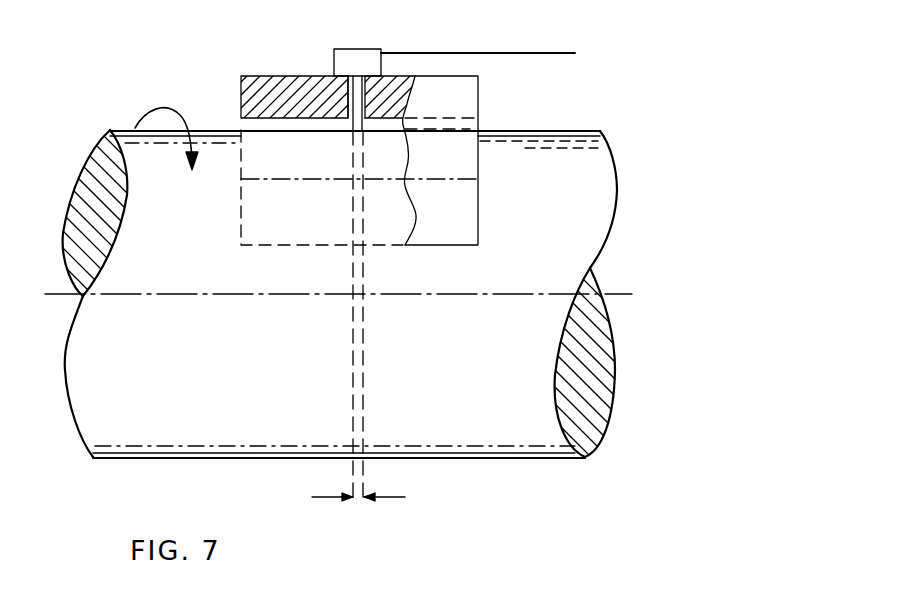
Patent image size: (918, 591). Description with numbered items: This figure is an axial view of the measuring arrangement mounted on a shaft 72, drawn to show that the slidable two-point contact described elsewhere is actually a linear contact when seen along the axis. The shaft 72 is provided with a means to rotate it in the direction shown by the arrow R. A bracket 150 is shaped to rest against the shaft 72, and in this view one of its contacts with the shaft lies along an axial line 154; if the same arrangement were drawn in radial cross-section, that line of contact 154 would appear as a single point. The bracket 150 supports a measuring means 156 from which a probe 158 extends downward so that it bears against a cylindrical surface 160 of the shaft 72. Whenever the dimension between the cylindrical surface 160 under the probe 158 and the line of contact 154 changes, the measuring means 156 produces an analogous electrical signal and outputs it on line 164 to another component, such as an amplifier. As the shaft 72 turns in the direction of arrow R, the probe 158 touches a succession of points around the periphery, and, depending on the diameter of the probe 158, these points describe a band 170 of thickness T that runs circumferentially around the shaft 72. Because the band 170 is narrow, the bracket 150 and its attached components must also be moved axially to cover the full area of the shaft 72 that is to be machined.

The shaft 72 is at (583, 241).
The bracket 150 is at (400, 98).
The axial line of contact 154 is at (453, 180).
The measuring means 156 is at (355, 49).
The probe 158 is at (352, 92).
The cylindrical surface 160 is at (287, 122).
The line 164 is at (508, 52).
The band 170 is at (363, 398).
The arrow indicating direction of rotation R is at (170, 110).
The thickness of band T is at (360, 504).